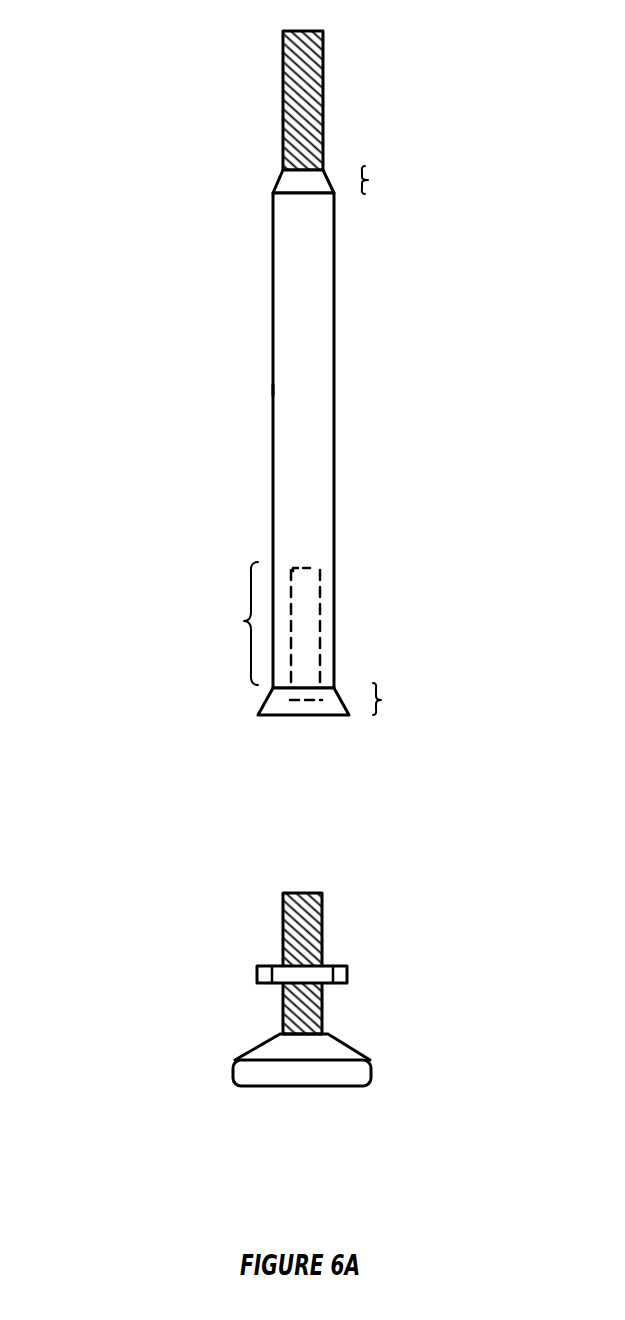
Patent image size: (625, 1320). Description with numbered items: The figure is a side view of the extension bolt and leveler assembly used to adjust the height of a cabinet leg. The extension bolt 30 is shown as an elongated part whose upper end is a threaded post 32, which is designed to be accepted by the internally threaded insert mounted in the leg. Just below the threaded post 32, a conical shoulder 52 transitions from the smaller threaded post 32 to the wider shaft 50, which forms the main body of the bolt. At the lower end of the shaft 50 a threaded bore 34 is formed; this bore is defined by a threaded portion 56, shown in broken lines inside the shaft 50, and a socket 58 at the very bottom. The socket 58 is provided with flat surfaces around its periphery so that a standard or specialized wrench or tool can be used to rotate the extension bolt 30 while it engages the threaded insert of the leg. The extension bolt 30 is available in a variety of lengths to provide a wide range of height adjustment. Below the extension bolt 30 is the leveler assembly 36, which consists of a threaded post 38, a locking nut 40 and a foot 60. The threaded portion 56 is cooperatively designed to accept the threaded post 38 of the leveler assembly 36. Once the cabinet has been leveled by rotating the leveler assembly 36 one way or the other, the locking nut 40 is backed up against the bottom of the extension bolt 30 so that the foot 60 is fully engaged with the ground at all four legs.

The extension bolt 30 is at (372, 420).
The threaded post 32 is at (255, 105).
The threaded bore 34 is at (286, 742).
The leveler assembly 36 is at (296, 1024).
The threaded post 38 is at (322, 912).
The locking nut 40 is at (257, 977).
The shaft 50 is at (273, 390).
The conical shoulder 52 is at (370, 179).
The threaded portion 56 is at (243, 621).
The socket 58 is at (309, 716).
The foot 60 is at (233, 1071).